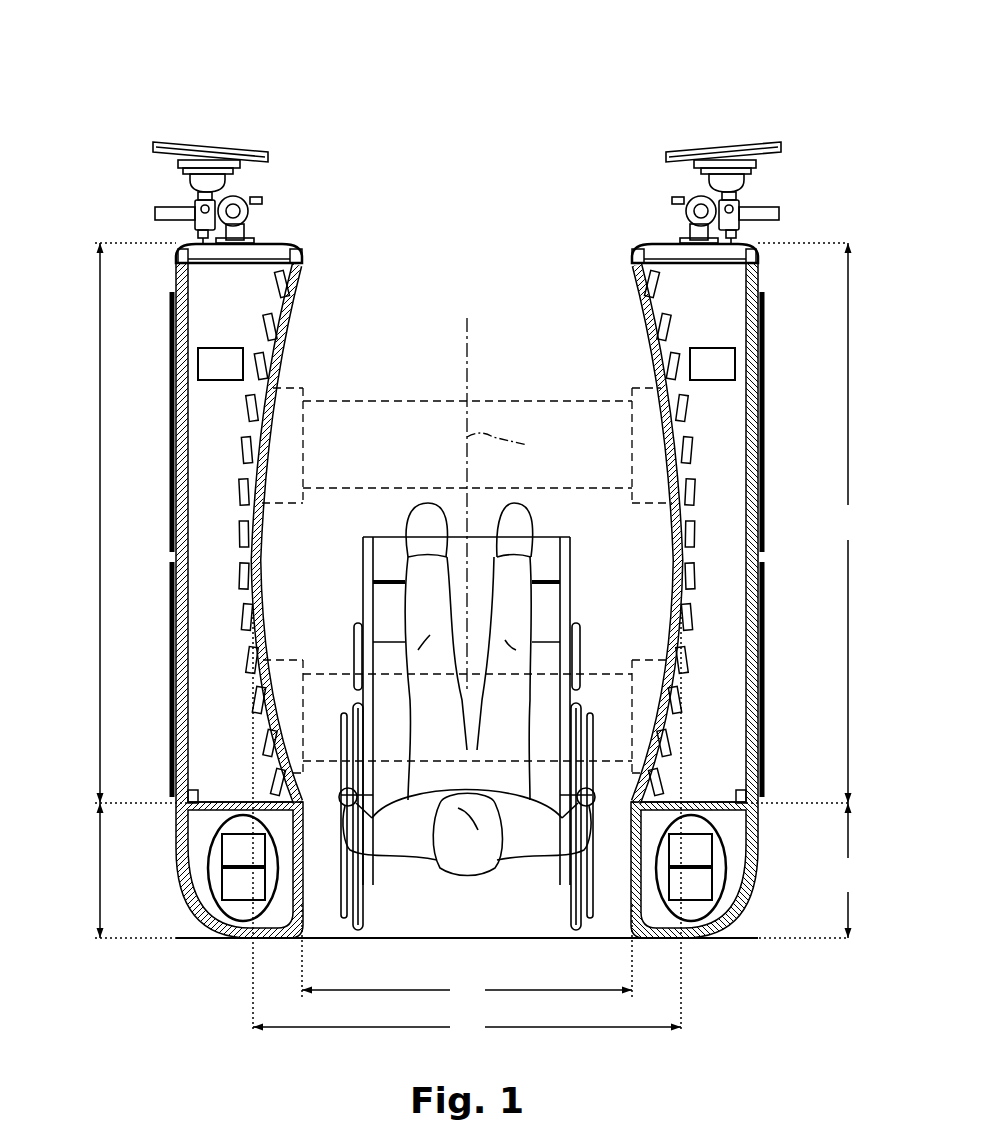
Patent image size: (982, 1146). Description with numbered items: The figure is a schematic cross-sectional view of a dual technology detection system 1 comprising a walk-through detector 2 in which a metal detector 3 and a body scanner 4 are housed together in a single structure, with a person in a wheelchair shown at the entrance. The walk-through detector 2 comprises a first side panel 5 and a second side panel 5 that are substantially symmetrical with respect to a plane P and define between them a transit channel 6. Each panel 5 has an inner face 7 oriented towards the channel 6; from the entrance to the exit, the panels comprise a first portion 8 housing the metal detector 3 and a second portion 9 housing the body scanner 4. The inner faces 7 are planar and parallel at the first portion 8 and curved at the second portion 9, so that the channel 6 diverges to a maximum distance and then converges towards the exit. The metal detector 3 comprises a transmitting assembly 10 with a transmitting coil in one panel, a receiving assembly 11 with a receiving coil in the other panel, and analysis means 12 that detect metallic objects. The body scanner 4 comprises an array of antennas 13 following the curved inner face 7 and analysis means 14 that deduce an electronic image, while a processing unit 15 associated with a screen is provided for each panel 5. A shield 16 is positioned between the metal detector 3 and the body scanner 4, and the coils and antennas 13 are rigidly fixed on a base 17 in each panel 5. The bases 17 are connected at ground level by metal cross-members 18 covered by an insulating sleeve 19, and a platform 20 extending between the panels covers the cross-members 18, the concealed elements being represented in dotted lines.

The dual technology detection system 1 is at (784, 96).
The walk-through detector 2 is at (782, 298).
The metal detector 3 is at (211, 863).
The body scanner 4 is at (225, 488).
The side panel 5 is at (211, 658).
The transit channel 6 is at (498, 488).
The inner face 7 is at (285, 556).
The first portion 8 is at (82, 870).
The second portion 9 is at (82, 523).
The transmitting assembly 10 is at (243, 850).
The receiving assembly 11 is at (690, 850).
The analysis means 12 is at (467, 884).
The antenna 13 is at (262, 343).
The analysis means 14 is at (466, 364).
The processing unit 15 is at (195, 177).
The shield 16 is at (232, 802).
The base 17 is at (185, 591).
The metal cross-member 18 is at (388, 418).
The sleeve 19 is at (289, 386).
The platform 20 is at (545, 276).